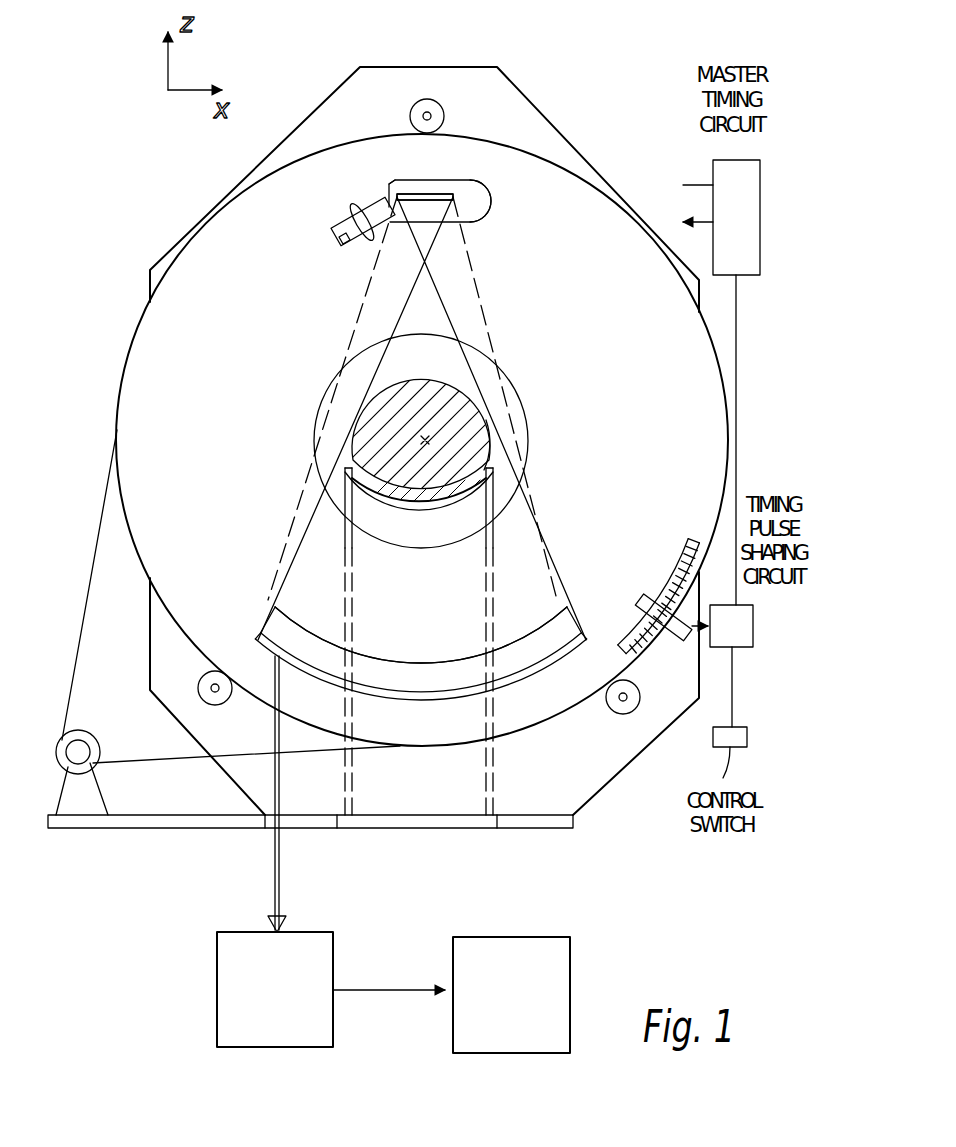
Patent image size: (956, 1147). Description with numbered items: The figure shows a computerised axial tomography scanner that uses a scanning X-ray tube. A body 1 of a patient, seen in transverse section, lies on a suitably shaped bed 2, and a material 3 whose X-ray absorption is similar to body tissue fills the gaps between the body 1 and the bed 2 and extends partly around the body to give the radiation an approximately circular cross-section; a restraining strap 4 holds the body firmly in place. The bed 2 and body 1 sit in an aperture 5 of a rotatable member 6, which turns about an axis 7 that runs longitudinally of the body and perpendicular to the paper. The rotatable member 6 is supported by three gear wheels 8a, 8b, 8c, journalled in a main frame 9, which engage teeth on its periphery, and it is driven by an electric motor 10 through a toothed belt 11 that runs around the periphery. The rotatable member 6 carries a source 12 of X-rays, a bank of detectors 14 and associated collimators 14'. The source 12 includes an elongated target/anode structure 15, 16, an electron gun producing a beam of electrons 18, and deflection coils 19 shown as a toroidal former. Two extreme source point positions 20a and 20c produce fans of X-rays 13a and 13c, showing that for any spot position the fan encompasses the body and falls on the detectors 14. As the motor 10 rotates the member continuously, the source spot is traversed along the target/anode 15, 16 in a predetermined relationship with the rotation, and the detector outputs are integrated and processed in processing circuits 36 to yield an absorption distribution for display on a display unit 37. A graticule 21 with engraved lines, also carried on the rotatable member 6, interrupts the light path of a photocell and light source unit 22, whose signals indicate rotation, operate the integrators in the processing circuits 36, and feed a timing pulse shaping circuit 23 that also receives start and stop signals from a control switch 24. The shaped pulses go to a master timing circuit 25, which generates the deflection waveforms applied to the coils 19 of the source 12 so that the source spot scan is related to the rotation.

The body 1 is at (456, 400).
The bed 2 is at (418, 509).
The material 3 is at (432, 502).
The restraining strap 4 is at (492, 424).
The aperture 5 is at (318, 396).
The rotatable member 6 is at (124, 381).
The axis 7 is at (424, 439).
The gear wheel 8a is at (618, 714).
The gear wheel 8b is at (222, 706).
The gear wheel 8c is at (412, 110).
The main frame 9 is at (540, 110).
The electric motor 10 is at (100, 748).
The toothed belt 11 is at (97, 548).
The source of X-rays 12 is at (491, 206).
The fan of X-rays 13a is at (478, 301).
The fan of X-rays 13c is at (370, 292).
The bank of detectors 14 is at (428, 653).
The collimators 14' is at (447, 630).
The target/anode structure 15 is at (430, 194).
The target/anode structure 16 is at (430, 194).
The beam of electrons 18 is at (388, 206).
The deflection coils 19 is at (353, 212).
The extreme source point position 20a is at (472, 197).
The extreme source point position 20c is at (396, 184).
The graticule 21 is at (680, 553).
The photocell and light source unit 22 is at (648, 598).
The timing pulse shaping circuit 23 is at (772, 595).
The control switch 24 is at (713, 740).
The master timing circuit 25 is at (735, 145).
The processing circuits 36 is at (235, 930).
The display unit 37 is at (548, 937).